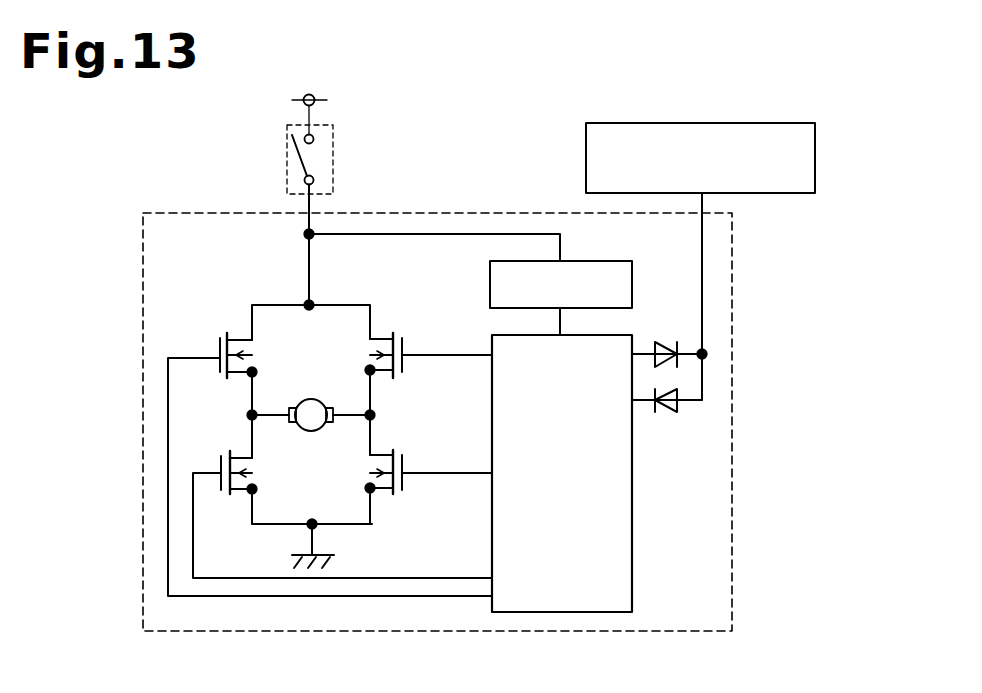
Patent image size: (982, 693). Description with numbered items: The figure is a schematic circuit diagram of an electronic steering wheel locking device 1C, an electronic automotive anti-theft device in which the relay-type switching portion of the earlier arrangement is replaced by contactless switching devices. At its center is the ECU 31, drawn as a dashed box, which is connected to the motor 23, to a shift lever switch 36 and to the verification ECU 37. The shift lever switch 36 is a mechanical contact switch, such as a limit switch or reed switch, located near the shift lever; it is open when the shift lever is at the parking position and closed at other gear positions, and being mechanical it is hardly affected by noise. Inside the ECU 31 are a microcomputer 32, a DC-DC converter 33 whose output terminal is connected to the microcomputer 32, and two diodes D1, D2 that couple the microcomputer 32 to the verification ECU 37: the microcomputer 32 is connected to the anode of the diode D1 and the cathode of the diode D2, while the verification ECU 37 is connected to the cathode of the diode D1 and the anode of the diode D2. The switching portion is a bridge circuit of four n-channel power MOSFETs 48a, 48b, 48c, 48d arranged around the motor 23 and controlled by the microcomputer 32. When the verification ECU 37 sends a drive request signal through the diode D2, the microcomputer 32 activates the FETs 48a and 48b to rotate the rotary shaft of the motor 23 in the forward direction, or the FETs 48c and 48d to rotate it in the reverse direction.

The electronic steering wheel locking device 1C is at (763, 72).
The motor 23 is at (312, 397).
The ECU 31 is at (733, 488).
The microcomputer 32 is at (632, 527).
The DC-DC converter 33 is at (605, 259).
The shift lever switch 36 is at (333, 158).
The verification ECU 37 is at (815, 145).
The n-channel power MOSFET 48a is at (402, 368).
The n-channel power MOSFET 48b is at (221, 490).
The n-channel power MOSFET 48c is at (220, 340).
The n-channel power MOSFET 48d is at (402, 490).
The diode D1 is at (667, 342).
The diode D2 is at (667, 412).